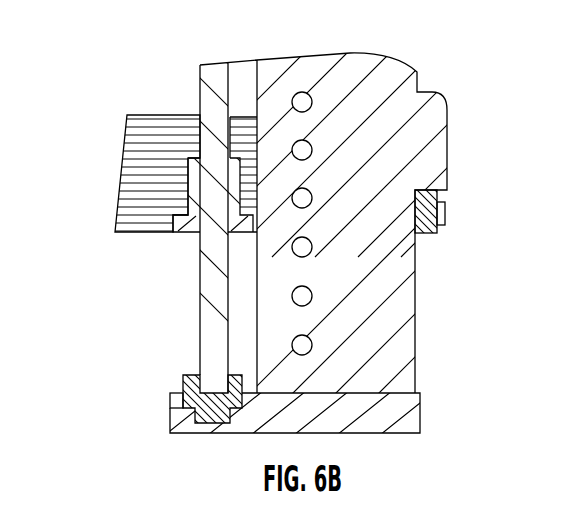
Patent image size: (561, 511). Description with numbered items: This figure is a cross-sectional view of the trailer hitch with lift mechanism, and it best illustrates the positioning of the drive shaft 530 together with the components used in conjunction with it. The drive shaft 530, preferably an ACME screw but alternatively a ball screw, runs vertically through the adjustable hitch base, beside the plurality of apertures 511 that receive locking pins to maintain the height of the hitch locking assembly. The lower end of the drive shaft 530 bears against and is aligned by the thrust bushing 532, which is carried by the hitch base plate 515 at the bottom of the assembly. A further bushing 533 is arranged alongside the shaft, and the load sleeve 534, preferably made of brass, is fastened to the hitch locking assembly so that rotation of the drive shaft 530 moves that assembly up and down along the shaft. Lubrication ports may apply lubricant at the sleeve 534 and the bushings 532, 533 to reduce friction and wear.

The apertures 511 is at (312, 253).
The hitch base plate 515 is at (407, 433).
The drive shaft 530 is at (198, 88).
The thrust bushing 532 is at (174, 412).
The bushing 533 is at (185, 188).
The load sleeve 534 is at (181, 372).